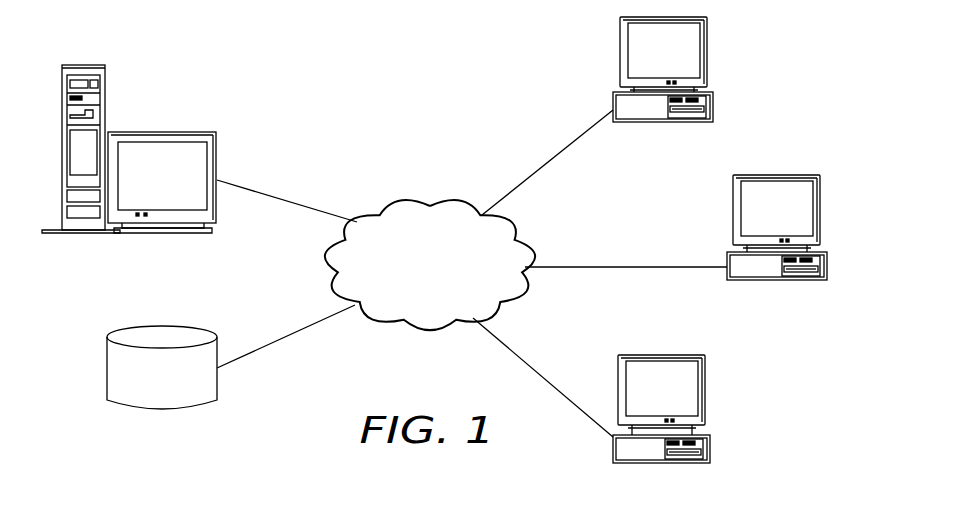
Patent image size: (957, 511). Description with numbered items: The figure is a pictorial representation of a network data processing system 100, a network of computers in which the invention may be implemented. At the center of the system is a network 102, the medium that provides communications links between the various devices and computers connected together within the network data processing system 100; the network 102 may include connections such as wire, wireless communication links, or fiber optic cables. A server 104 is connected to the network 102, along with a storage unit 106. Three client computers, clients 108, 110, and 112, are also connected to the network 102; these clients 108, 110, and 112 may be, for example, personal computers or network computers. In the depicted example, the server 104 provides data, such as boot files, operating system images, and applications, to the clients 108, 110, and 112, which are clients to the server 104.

The network data processing system 100 is at (308, 58).
The network 102 is at (410, 290).
The server 104 is at (105, 88).
The storage unit 106 is at (107, 370).
The client 108 is at (707, 57).
The client 110 is at (820, 215).
The client 112 is at (707, 395).